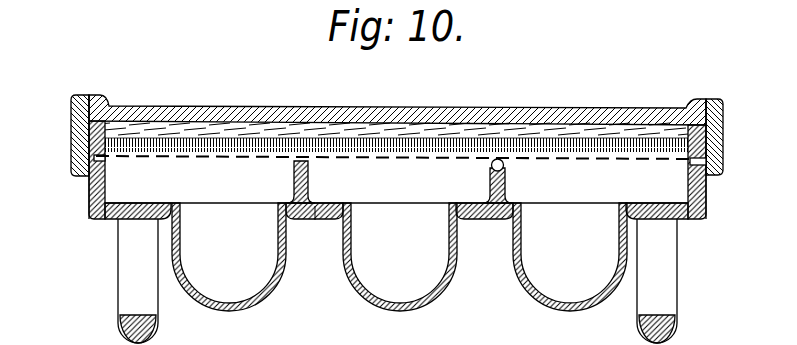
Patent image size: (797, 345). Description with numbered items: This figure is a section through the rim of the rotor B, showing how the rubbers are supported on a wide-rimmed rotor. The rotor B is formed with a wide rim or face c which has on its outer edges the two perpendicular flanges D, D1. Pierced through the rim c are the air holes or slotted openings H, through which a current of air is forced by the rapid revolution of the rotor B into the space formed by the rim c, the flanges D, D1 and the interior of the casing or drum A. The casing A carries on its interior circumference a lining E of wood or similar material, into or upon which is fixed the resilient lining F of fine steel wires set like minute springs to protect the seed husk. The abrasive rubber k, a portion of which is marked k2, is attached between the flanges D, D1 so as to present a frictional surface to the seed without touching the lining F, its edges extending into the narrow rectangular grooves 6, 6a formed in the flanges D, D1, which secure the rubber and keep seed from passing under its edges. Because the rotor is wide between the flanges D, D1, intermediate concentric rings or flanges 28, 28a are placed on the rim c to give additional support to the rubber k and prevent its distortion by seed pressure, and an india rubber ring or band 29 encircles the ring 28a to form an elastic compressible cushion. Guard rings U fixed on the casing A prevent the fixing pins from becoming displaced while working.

The casing or drum A is at (598, 113).
The lining E is at (624, 127).
The resilient lining F is at (648, 138).
The guard ring U is at (63, 115).
The flange D is at (80, 166).
The flange D1 is at (698, 180).
The groove 6 is at (97, 149).
The groove 6a is at (682, 158).
The rubber k is at (560, 150).
The sheet portion k2 is at (518, 149).
The concentric ring or flange 28 is at (290, 182).
The concentric ring or flange 28a is at (483, 187).
The india rubber ring or band 29 is at (475, 173).
The air hole or slotted opening H is at (399, 257).
The rotor B is at (397, 281).
The rim or face c is at (307, 212).